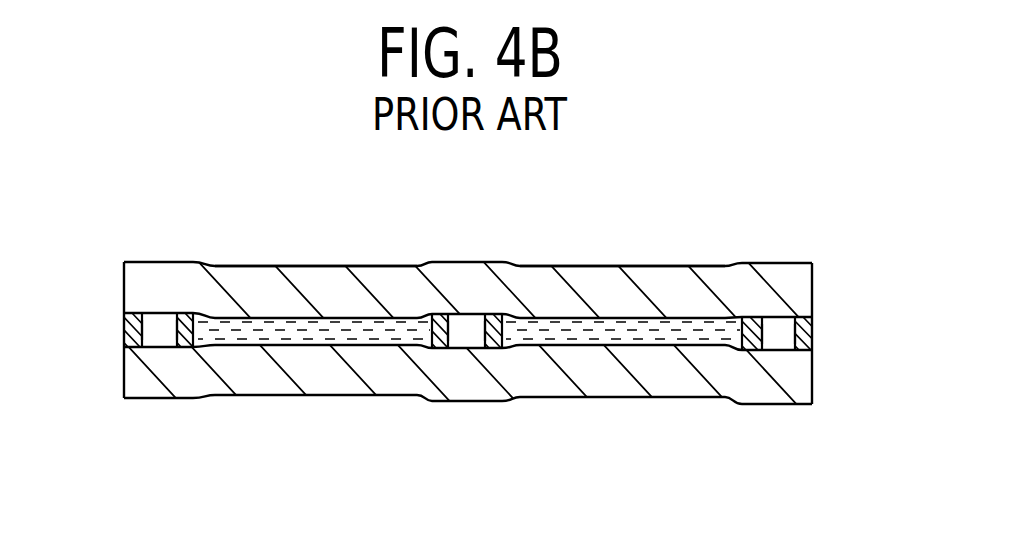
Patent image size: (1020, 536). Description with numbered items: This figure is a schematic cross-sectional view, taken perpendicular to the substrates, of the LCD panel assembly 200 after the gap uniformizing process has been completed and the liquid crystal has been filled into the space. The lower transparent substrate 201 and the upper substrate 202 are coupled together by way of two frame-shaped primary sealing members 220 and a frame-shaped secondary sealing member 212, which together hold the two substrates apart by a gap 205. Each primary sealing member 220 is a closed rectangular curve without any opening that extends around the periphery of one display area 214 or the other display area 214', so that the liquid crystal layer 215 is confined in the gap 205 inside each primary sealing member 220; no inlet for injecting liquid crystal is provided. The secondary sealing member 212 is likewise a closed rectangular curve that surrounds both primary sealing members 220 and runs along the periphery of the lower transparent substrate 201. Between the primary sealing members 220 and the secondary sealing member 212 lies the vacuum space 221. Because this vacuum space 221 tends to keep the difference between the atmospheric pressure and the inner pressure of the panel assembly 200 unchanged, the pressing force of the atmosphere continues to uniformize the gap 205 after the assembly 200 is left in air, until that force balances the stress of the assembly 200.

The LCD panel assembly 200 is at (722, 186).
The lower transparent substrate 201 is at (802, 380).
The upper substrate 202 is at (800, 290).
The gap 205 is at (116, 308).
The secondary sealing member 212 is at (800, 339).
The display area 214 is at (313, 222).
The display area 214' is at (623, 222).
The liquid crystal layer 215 is at (303, 338).
The primary sealing member 220 is at (440, 314).
The vacuum space 221 is at (160, 322).